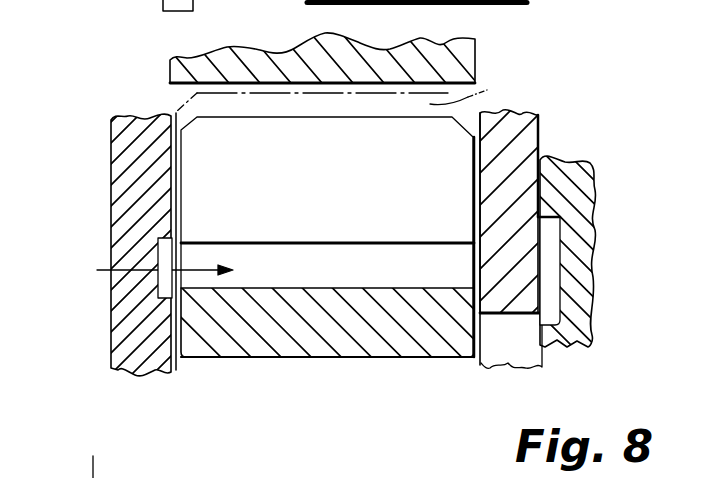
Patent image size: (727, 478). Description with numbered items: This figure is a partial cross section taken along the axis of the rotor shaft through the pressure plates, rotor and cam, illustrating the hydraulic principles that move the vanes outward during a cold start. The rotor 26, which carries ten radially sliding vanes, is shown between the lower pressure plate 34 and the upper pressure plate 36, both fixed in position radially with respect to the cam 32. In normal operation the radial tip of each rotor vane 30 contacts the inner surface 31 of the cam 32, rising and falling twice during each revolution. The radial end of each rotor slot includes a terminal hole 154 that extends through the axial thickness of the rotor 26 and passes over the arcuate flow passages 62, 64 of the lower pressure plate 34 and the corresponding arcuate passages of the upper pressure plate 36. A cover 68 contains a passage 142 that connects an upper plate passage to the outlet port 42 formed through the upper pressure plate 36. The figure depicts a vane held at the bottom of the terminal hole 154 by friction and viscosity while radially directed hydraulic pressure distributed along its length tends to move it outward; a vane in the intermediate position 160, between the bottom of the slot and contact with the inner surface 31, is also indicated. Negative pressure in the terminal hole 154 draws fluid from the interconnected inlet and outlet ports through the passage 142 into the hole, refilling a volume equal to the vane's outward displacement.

The rotor 26 is at (300, 340).
The rotor vane 30 is at (386, 207).
The inner surface of cam 31 is at (463, 80).
The cam ring 32 is at (455, 52).
The lower pressure plate 34 is at (125, 162).
The upper pressure plate 36 is at (522, 136).
The outlet port 42 is at (511, 355).
The arcuate flow passage 62 is at (96, 283).
The arcuate flow passage 64 is at (161, 283).
The cover 68 is at (567, 192).
The passage 142 is at (548, 245).
The terminal hole 154 is at (438, 266).
The intermediate position of vane 160 is at (487, 90).